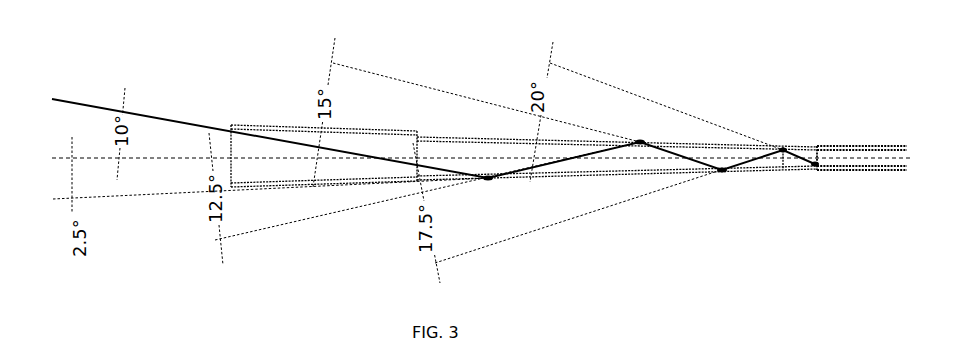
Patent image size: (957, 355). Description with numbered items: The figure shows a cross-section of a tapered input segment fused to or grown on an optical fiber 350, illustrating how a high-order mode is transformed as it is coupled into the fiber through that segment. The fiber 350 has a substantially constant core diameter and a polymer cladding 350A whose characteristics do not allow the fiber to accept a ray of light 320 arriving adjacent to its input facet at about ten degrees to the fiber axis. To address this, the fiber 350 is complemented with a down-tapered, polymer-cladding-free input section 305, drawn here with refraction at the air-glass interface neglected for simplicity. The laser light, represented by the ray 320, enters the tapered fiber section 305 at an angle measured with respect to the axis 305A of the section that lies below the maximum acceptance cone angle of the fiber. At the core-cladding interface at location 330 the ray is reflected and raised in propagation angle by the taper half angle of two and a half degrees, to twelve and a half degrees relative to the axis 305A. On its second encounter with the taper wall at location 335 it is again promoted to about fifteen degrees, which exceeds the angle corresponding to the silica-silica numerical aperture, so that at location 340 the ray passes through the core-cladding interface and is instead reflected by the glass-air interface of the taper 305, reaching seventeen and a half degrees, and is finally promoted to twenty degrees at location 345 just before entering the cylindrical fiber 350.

The tapered fiber section 305 is at (246, 118).
The axis of the tapered section 305A is at (162, 160).
The ray of light 320 is at (74, 88).
The first reflection location 330 is at (490, 189).
The second reflection location 335 is at (640, 134).
The third reflection location 340 is at (724, 181).
The fourth reflection location 345 is at (780, 140).
The fiber 350 is at (799, 139).
The polymer cladding 350A is at (855, 180).